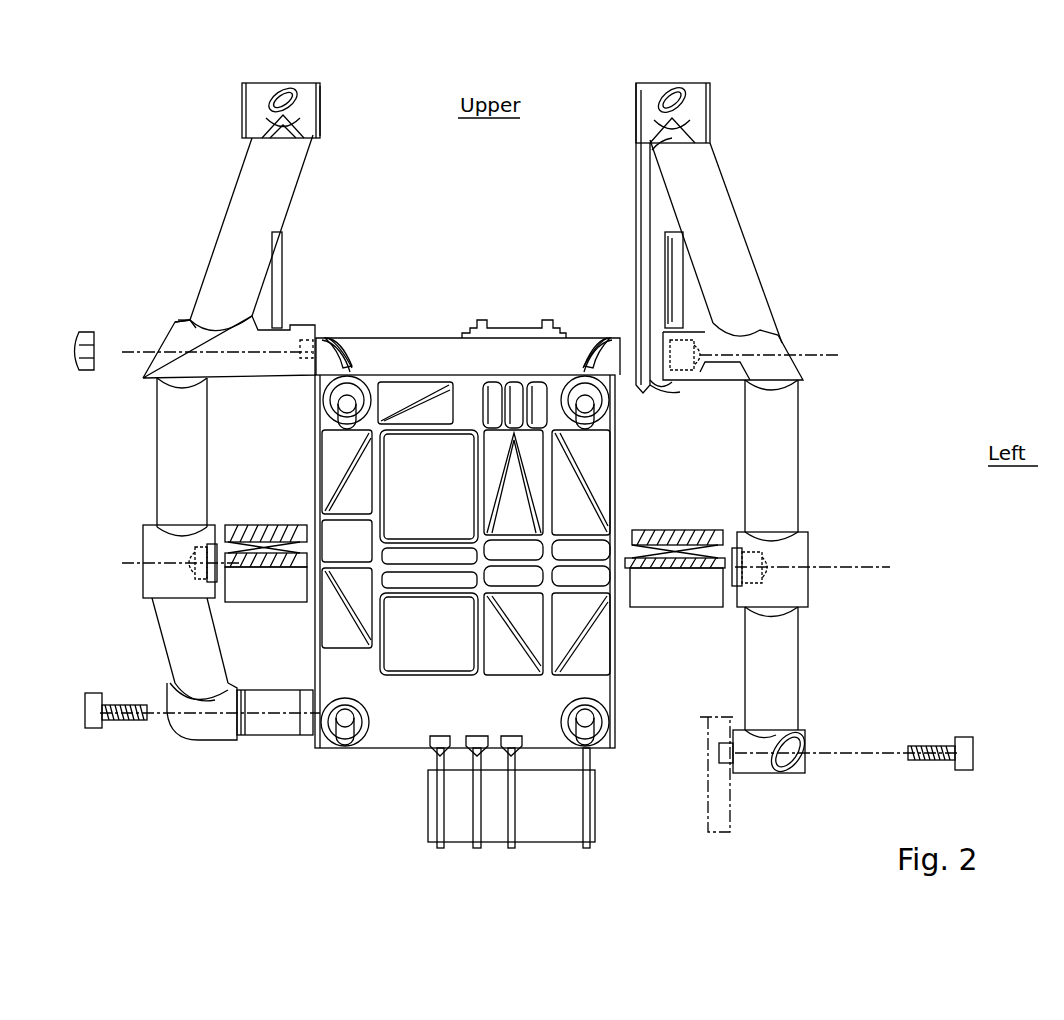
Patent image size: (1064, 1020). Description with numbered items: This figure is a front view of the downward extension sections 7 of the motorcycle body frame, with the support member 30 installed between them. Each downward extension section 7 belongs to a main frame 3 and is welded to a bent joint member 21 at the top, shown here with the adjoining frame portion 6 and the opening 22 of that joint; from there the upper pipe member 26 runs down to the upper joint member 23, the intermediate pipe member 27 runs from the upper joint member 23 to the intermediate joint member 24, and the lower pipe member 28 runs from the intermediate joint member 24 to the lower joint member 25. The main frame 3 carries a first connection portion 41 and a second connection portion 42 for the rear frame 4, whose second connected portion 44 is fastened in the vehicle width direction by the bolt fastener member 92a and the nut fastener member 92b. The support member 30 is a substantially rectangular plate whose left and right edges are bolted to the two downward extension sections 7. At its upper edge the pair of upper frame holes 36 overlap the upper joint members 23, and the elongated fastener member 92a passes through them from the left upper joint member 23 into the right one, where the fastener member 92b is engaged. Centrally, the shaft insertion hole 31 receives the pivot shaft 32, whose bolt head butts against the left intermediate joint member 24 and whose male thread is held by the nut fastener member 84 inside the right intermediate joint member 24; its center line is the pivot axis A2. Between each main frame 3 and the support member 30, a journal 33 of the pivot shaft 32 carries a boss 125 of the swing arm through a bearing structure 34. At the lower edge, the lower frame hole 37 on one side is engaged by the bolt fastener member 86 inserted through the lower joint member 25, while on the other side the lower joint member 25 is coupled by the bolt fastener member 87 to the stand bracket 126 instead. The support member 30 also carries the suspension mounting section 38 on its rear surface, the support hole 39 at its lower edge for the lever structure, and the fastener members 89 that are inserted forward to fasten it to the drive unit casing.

The main frame 3 is at (483, 200).
The head pipe 6 is at (475, 100).
The bent joint member 21 is at (258, 100).
The bolt hole 22 is at (302, 87).
The first connection portion 41 is at (322, 90).
The downward extension section 7 is at (467, 223).
The upper pipe member 26 is at (240, 210).
The second connection portion 42 is at (182, 320).
The fastener member 92b is at (87, 332).
The upper frame hole 36 is at (332, 336).
The upper joint member 23 is at (505, 296).
The fastener member 89 is at (352, 392).
The suspension mounting section 38 is at (486, 320).
The rear frame 4 is at (636, 148).
The fastener member 92a is at (690, 345).
The intermediate pipe member 27 is at (170, 414).
The intermediate joint member 24 is at (477, 529).
The fastener member 84 is at (196, 566).
The bearing structure 34 is at (250, 524).
The journal 33 is at (282, 530).
The shaft insertion hole 31 is at (427, 550).
The pivot shaft 32 is at (633, 530).
The second connected portion 44 is at (655, 388).
The lower pipe member 28 is at (172, 640).
The boss 125 is at (272, 604).
The fastener member 87 is at (964, 737).
The fastener member 86 is at (93, 728).
The lower joint member 25 is at (192, 742).
The lower frame hole 37 is at (278, 736).
The support member 30 is at (492, 550).
The support hole 39 is at (578, 828).
The stand bracket 126 is at (732, 808).
The pivot axis A2 is at (862, 567).